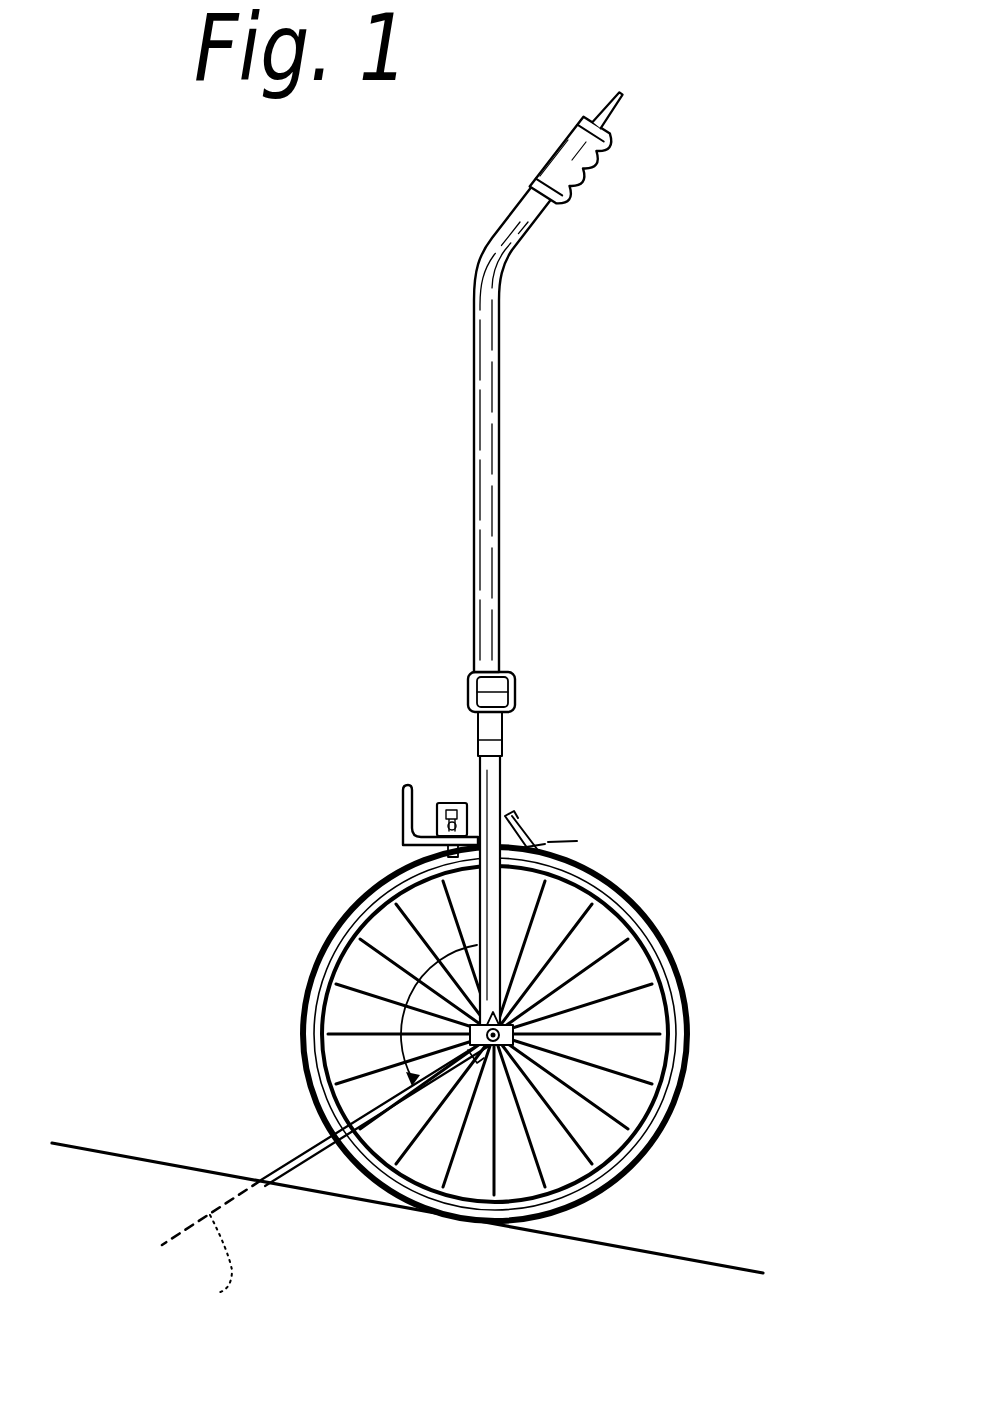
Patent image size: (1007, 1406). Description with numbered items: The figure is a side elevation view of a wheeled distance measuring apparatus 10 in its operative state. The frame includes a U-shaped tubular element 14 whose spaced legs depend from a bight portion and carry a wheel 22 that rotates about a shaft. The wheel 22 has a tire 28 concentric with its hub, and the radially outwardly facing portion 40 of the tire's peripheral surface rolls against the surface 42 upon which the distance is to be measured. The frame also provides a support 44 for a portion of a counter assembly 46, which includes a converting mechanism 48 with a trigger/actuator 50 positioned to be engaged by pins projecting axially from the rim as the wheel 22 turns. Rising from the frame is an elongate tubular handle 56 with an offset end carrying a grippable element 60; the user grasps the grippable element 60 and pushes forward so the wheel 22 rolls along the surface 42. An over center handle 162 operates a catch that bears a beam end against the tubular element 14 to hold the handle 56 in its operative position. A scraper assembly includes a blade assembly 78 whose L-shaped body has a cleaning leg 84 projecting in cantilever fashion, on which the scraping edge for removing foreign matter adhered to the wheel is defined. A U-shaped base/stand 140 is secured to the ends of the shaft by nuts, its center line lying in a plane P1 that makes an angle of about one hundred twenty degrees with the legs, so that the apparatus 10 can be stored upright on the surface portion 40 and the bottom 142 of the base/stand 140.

The distance measuring apparatus 10 is at (567, 724).
The U-shaped tubular element 14 is at (492, 792).
The wheel 22 is at (562, 1034).
The tire 28 is at (633, 902).
The radially outwardly facing portion 40 is at (468, 1224).
The surface 42 is at (695, 1257).
The support 44 is at (418, 810).
The counter assembly 46 is at (455, 792).
The converting mechanism 48 is at (467, 795).
The trigger/actuator 50 is at (413, 850).
The tubular handle 56 is at (490, 553).
The grippable element 60 is at (573, 170).
The blade assembly 78 is at (500, 850).
The cleaning leg 84 is at (510, 830).
The U-shaped base/stand 140 is at (327, 1168).
The bottom of the base/stand 142 is at (263, 1183).
The over center handle 162 is at (490, 728).
The plane P1 is at (221, 1272).